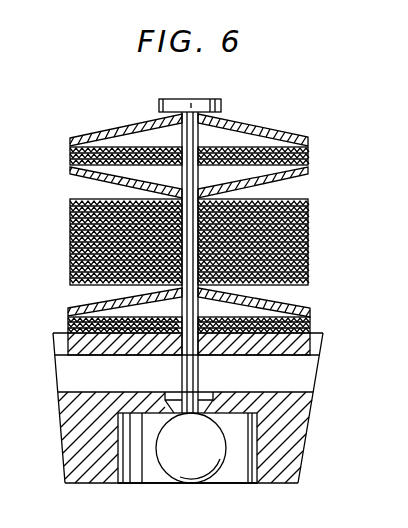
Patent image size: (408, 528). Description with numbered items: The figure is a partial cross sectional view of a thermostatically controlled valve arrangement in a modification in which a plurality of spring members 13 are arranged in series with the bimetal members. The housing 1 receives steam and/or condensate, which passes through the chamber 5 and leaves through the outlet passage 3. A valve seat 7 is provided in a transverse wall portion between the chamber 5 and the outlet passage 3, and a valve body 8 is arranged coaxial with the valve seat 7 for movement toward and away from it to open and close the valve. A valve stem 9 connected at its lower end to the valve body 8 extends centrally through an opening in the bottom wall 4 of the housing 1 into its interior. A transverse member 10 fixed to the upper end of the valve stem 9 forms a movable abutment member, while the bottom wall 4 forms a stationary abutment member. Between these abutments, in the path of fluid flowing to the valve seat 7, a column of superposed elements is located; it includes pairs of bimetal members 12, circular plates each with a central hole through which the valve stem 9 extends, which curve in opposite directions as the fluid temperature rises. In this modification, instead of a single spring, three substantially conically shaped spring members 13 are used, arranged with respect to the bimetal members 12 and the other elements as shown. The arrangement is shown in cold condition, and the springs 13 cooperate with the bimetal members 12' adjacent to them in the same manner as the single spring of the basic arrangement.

The housing 1 is at (318, 337).
The outlet passage 3 is at (120, 478).
The bottom wall 4 is at (68, 326).
The chamber 5 is at (78, 373).
The valve seat 7 is at (203, 414).
The valve body 8 is at (193, 479).
The valve stem 9 is at (189, 370).
The transverse member 10 is at (159, 104).
The bimetal members 12 is at (210, 242).
The bimetal members 12' is at (213, 236).
The spring members 13 is at (280, 139).